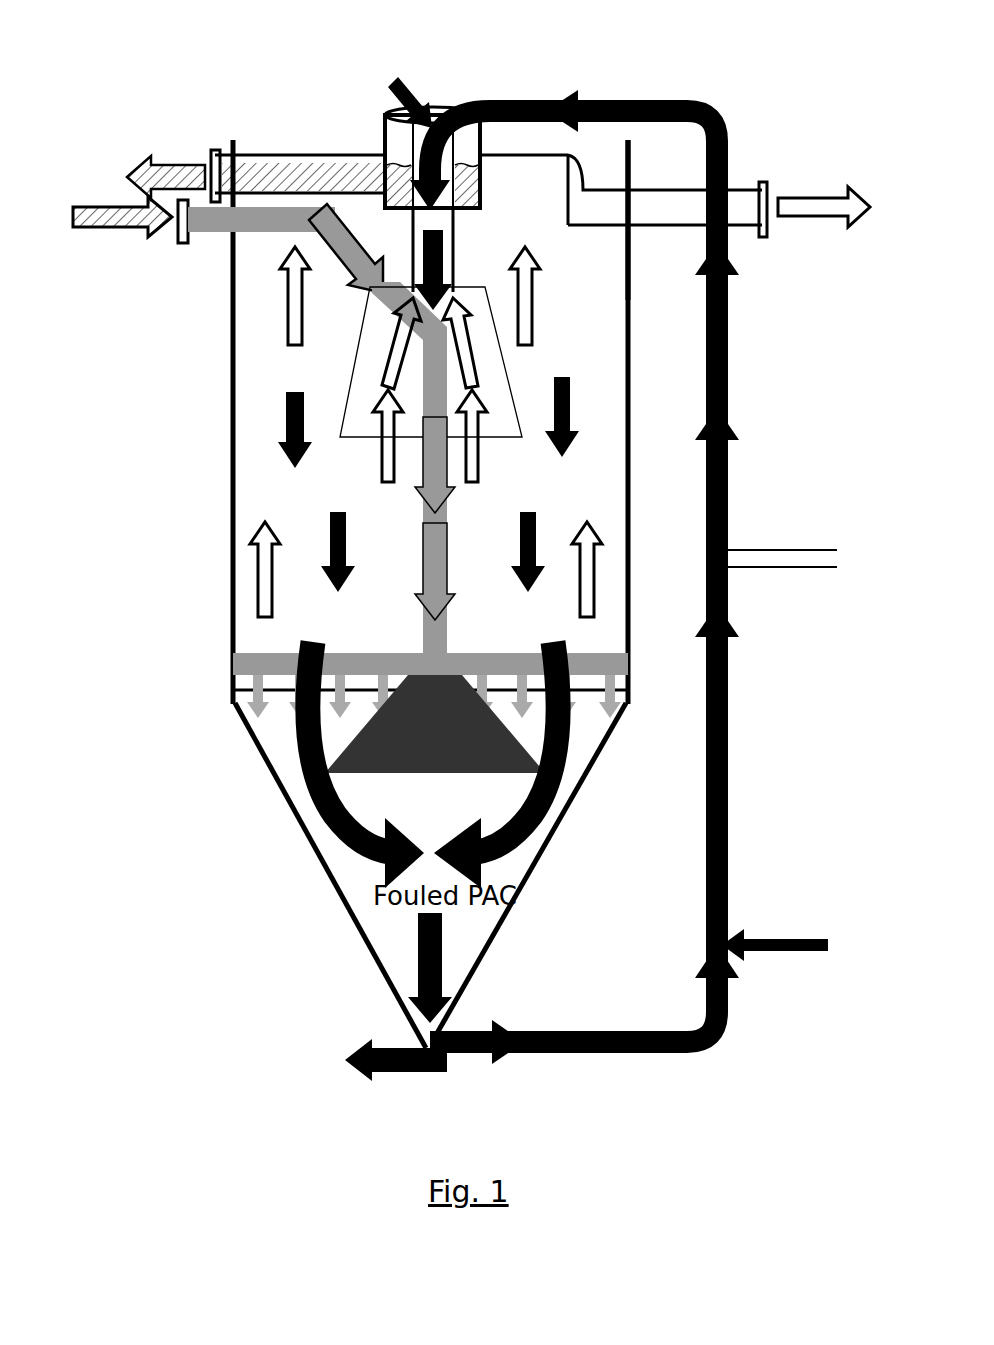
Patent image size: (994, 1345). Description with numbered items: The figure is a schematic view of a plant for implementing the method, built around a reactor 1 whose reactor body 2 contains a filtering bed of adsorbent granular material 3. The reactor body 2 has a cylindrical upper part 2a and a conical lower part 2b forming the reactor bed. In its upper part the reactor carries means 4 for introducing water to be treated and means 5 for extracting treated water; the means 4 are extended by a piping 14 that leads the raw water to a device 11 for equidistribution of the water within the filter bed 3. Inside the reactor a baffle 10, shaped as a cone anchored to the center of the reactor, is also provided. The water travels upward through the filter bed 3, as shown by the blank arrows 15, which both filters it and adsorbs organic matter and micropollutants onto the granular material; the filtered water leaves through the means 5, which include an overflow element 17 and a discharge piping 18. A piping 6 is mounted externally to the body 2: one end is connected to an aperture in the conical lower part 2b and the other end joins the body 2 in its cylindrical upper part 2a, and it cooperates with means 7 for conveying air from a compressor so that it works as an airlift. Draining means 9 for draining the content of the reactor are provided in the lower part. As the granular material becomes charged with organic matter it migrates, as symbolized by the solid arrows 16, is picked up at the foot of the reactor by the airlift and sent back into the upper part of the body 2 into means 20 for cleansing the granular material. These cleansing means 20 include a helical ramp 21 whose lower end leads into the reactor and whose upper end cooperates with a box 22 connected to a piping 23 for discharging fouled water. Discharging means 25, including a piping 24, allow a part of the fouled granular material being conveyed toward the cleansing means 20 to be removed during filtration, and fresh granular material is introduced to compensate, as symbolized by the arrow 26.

The reactor 1 is at (118, 480).
The reactor body 2 is at (233, 548).
The cylindrical upper part 2a is at (233, 650).
The conical lower part 2b is at (280, 766).
The filtering bed of adsorbent granular material 3 is at (618, 496).
The means for introducing water to be treated 4 is at (205, 230).
The means for extracting treated water 5 is at (746, 180).
The piping 6 is at (728, 680).
The means for conveying gas 7 is at (800, 940).
The draining means 9 is at (393, 1068).
The baffle 10 is at (520, 746).
The device for equidistribution of water 11 is at (600, 650).
The piping 14 is at (380, 312).
The blank arrows 15 is at (598, 568).
The solid arrows 16 is at (565, 392).
The overflow element 17 is at (560, 154).
The discharge piping 18 is at (748, 228).
The means for cleansing the granular material 20 is at (452, 90).
The helical ramp 21 is at (455, 248).
The box 22 is at (383, 142).
The piping for discharging fouled water 23 is at (226, 170).
The piping 24 is at (813, 558).
The discharging means 25 is at (770, 545).
The arrow 26 is at (412, 88).